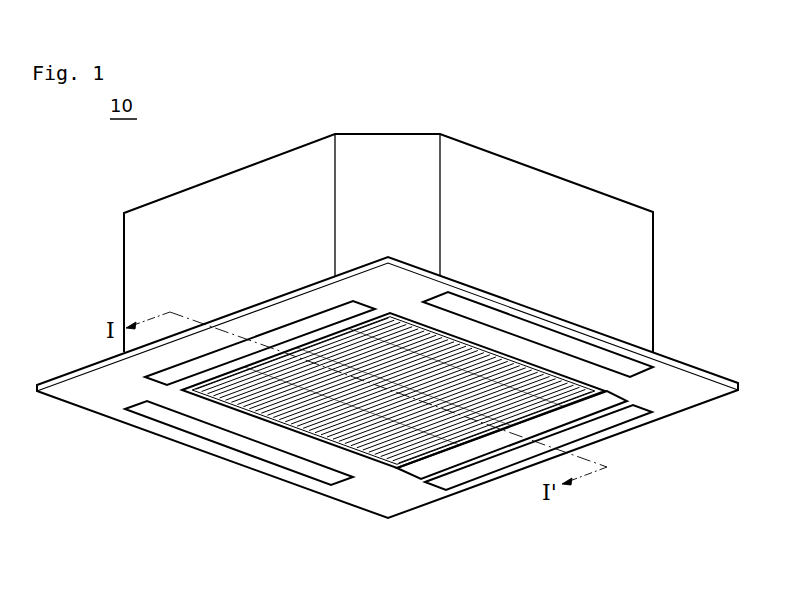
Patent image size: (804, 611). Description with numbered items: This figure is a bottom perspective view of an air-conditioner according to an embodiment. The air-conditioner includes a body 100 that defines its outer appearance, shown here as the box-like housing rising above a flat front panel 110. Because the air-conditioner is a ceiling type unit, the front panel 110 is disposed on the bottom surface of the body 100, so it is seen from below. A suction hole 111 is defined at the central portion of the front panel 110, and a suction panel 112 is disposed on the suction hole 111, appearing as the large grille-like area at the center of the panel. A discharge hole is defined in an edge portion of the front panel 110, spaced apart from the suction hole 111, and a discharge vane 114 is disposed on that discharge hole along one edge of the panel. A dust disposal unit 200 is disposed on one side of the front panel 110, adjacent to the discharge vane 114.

The body 100 is at (637, 258).
The front panel 110 is at (703, 392).
The suction hole 111 is at (403, 437).
The suction panel 112 is at (368, 437).
The discharge vane 114 is at (598, 425).
The dust disposal unit 200 is at (467, 452).